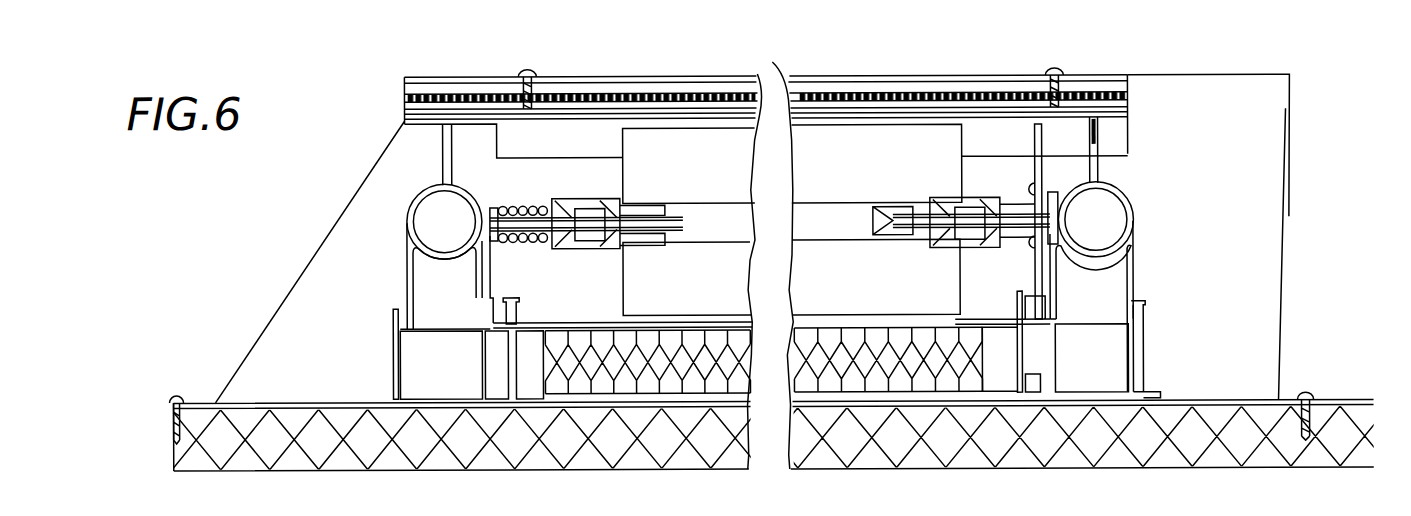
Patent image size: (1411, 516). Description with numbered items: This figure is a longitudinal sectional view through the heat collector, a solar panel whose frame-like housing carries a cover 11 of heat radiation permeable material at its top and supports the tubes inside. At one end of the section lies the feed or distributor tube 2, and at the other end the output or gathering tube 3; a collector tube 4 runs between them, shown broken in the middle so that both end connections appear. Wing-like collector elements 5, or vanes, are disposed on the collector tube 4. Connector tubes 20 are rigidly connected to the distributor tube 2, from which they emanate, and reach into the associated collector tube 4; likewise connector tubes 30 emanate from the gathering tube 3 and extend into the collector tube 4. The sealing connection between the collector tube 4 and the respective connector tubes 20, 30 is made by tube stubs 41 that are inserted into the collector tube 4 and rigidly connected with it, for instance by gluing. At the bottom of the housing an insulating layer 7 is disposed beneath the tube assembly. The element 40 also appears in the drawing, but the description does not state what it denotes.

The first housing 2 is at (433, 230).
The second housing 3 is at (1106, 226).
The slide block 4 is at (703, 220).
The bed 5 is at (807, 180).
The spring 7 is at (678, 378).
The guide rail 11 is at (437, 88).
The spring pack 20 is at (545, 222).
The shaft 30 is at (957, 217).
The plate 40 is at (1040, 162).
The bearing 41 is at (622, 202).